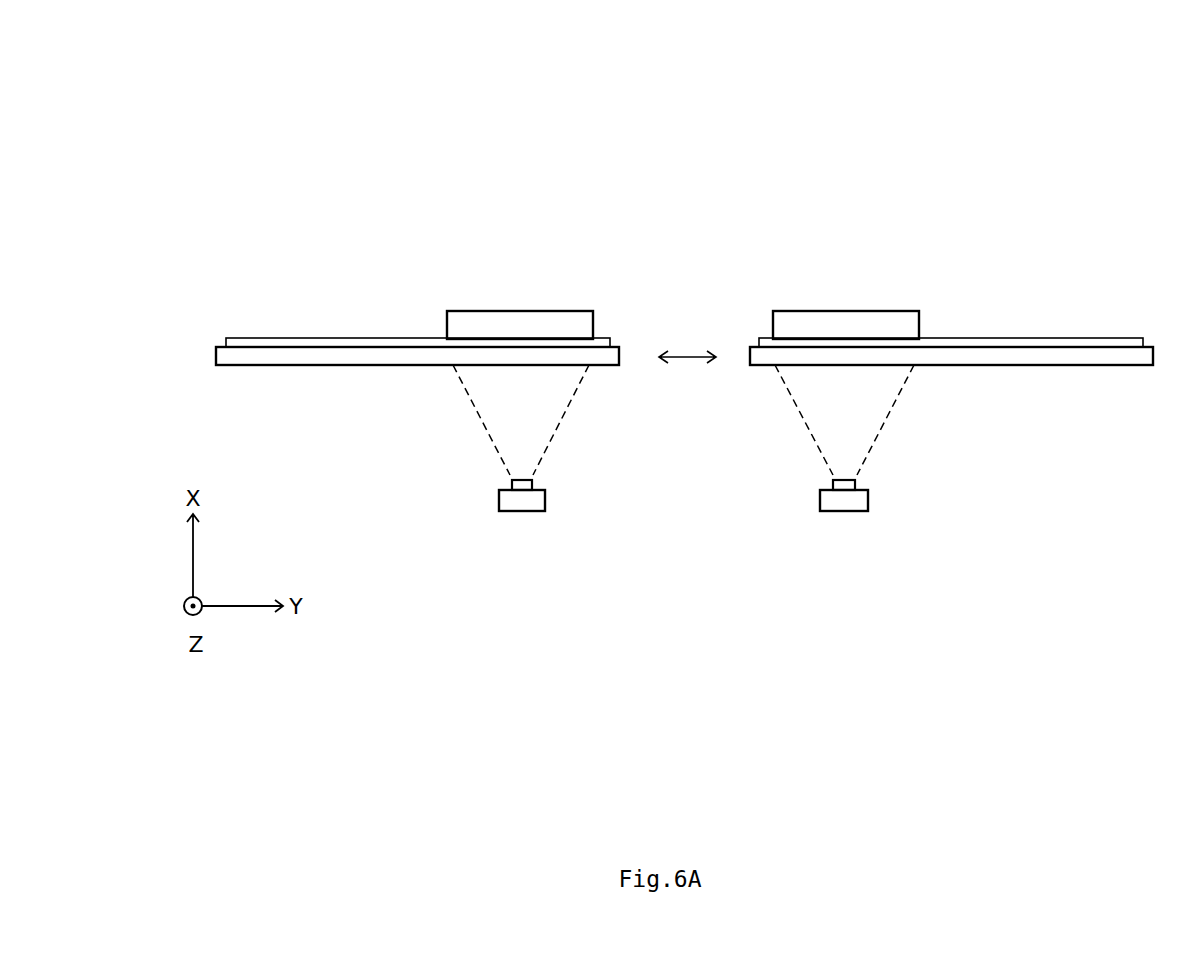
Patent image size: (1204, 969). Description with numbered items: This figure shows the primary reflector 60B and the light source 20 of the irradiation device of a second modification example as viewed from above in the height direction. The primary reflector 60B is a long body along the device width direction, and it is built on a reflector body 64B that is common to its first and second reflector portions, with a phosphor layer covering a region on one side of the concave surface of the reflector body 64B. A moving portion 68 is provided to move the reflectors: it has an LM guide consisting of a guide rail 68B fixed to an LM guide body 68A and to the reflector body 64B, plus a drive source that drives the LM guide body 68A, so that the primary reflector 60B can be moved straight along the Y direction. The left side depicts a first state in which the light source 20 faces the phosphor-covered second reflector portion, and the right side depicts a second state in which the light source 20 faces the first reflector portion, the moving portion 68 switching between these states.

The primary reflector 60B is at (262, 147).
The reflector body 64B is at (249, 356).
The moving portion 68 is at (375, 178).
The LM guide body 68A is at (463, 310).
The guide rail 68B is at (353, 338).
The light source 20 is at (545, 494).